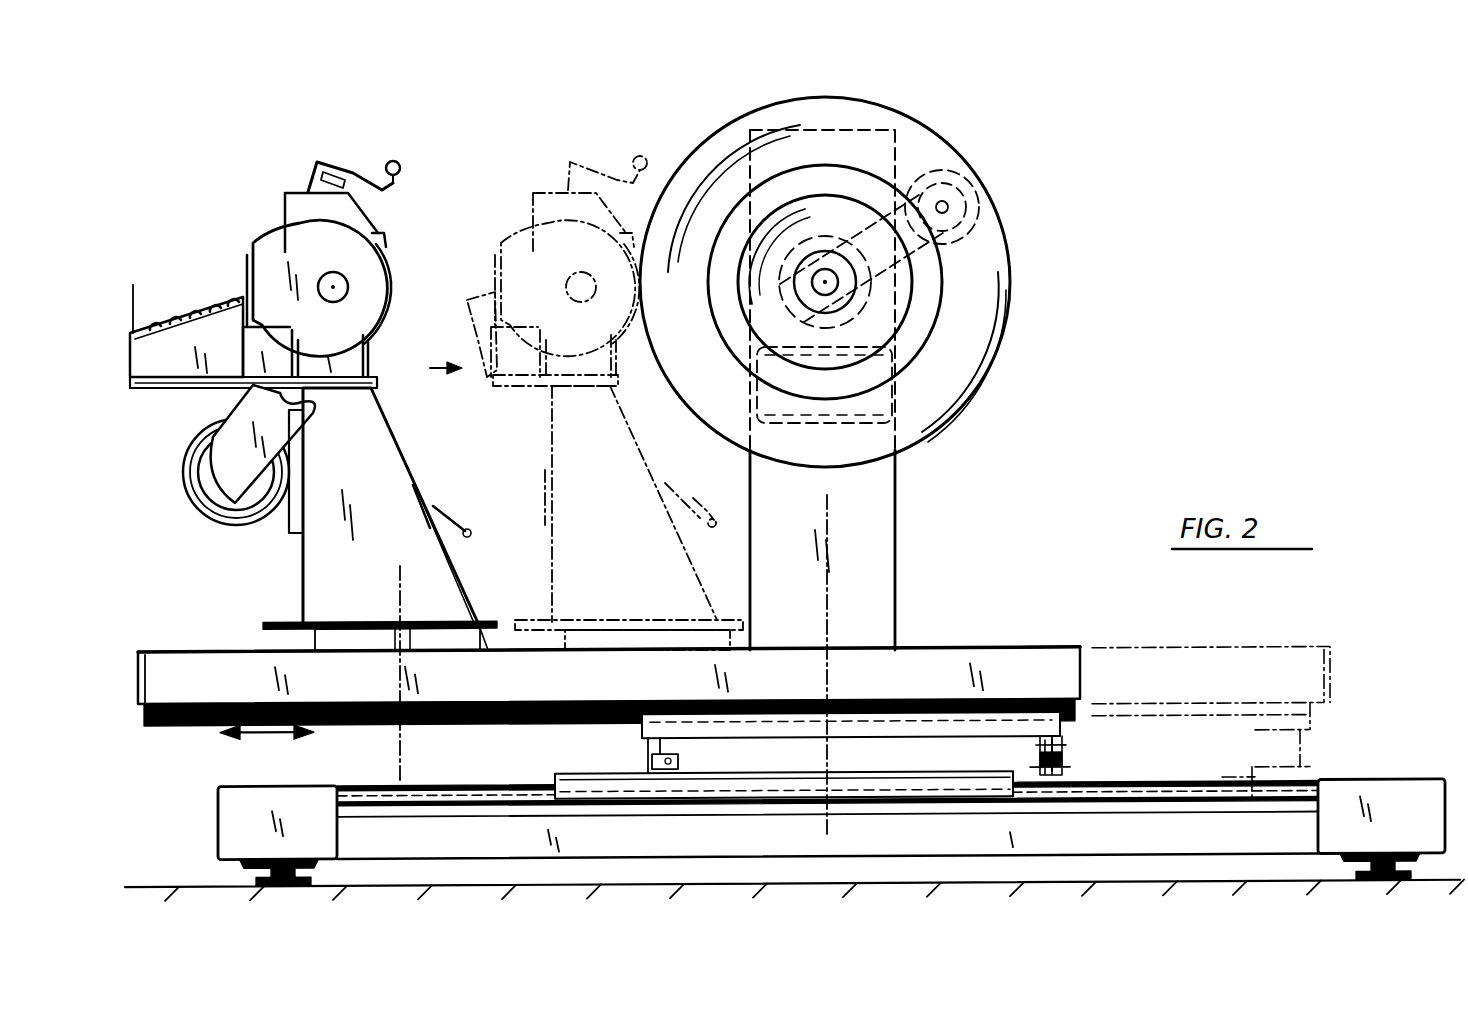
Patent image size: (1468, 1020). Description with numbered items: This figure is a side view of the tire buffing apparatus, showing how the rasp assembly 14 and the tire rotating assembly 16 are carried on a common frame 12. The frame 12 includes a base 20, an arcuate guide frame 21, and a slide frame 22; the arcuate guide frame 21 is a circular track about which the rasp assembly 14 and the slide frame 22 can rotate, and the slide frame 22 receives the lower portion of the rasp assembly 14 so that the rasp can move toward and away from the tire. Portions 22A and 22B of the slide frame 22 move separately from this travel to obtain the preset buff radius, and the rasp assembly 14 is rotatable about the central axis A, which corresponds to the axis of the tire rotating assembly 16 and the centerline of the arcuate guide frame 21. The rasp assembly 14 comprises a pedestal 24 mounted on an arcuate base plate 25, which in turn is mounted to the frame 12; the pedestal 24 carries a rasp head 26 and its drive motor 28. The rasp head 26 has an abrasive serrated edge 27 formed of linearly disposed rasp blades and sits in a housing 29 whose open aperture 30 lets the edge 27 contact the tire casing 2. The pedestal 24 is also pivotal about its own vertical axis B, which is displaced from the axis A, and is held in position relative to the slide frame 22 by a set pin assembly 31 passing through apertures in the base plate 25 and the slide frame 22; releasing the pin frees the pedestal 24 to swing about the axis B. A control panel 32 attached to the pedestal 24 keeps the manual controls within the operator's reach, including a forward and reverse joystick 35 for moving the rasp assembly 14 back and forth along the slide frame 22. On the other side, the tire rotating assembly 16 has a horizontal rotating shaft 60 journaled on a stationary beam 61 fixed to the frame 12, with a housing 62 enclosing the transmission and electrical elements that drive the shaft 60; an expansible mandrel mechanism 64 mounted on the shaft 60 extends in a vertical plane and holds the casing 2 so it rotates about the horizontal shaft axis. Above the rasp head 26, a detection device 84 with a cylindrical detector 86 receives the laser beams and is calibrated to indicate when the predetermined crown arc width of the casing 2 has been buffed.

The tire casing 2 is at (1008, 228).
The frame 12 is at (1337, 767).
The rasp assembly 14 is at (257, 232).
The tire rotating assembly 16 is at (1003, 182).
The base 20 is at (553, 832).
The arcuate guide frame 21 is at (1062, 751).
The slide frame 22 is at (1052, 647).
The slide frame portion 22A is at (512, 732).
The slide frame portion 22B is at (640, 738).
The pedestal 24 is at (407, 466).
The arcuate base plate 25 is at (273, 622).
The rasp head 26 is at (388, 302).
The abrasive serrated edge 27 is at (392, 272).
The drive motor 28 is at (194, 495).
The housing 29 is at (395, 244).
The open aperture 30 is at (390, 257).
The set pin assembly 31 is at (410, 636).
The control panel 32 is at (186, 316).
The forward and reverse joystick 35 is at (225, 297).
The rotating shaft 60 is at (825, 284).
The stationary beam 61 is at (878, 522).
The housing 62 is at (893, 118).
The expansible mandrel mechanism 64 is at (917, 325).
The detection device 84 is at (345, 165).
The cylindrical detector 86 is at (398, 165).
The central axis A is at (840, 618).
The central vertical axis B is at (402, 587).